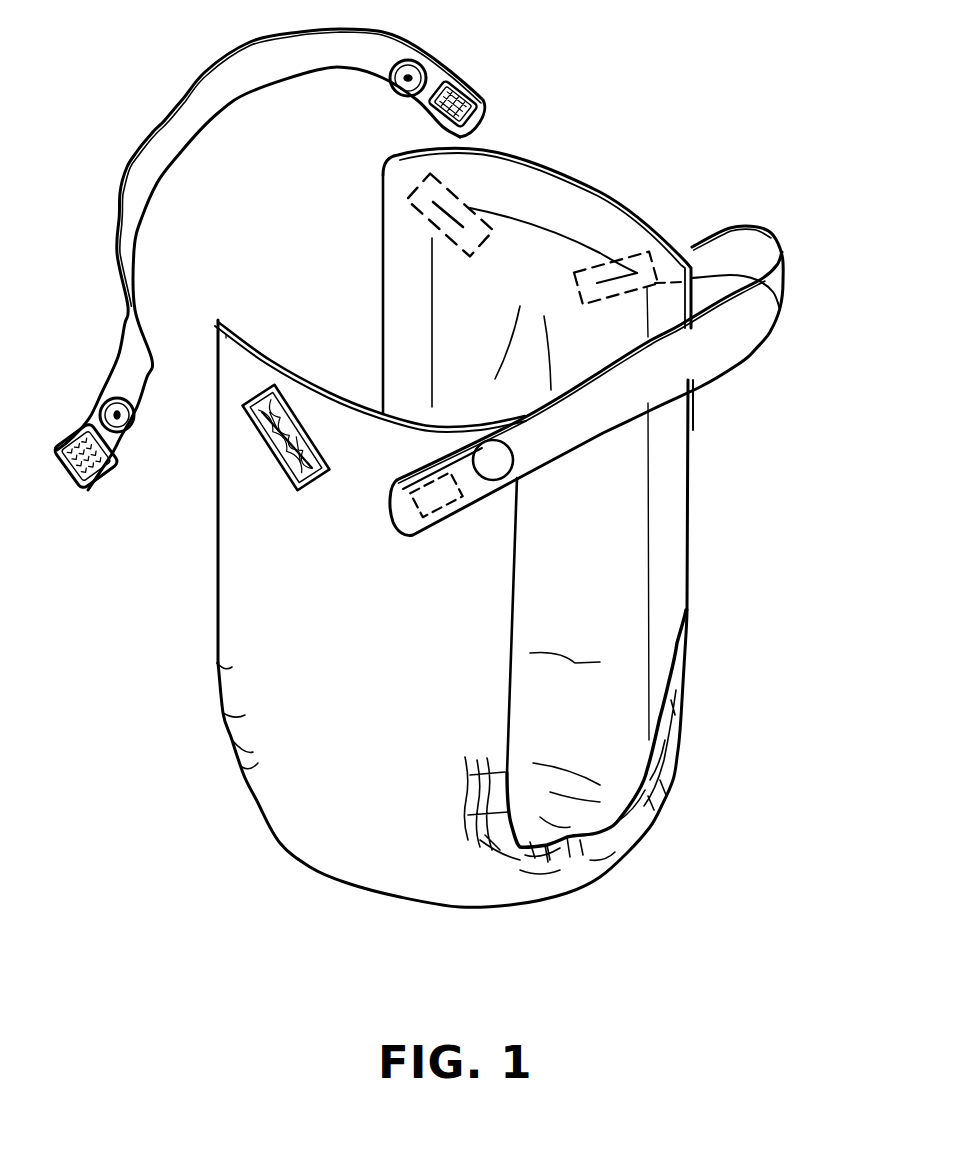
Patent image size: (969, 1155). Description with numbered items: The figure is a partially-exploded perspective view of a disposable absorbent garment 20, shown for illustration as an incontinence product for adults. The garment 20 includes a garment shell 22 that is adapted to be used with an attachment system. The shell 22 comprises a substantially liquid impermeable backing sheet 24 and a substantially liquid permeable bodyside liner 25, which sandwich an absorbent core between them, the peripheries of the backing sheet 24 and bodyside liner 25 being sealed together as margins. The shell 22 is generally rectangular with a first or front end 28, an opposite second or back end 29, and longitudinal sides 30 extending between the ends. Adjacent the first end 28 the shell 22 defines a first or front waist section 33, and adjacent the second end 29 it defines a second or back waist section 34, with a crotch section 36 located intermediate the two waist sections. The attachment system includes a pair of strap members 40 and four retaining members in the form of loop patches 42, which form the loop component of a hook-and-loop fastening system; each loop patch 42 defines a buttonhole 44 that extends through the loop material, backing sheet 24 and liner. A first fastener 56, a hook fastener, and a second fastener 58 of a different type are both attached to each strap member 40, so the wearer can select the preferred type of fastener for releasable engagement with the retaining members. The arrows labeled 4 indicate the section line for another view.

The disposable absorbent garment 20 is at (222, 893).
The garment shell 22 is at (222, 719).
The backing sheet 24 is at (382, 688).
The bodyside liner 25 is at (595, 597).
The first end 28 is at (303, 376).
The second end 29 is at (615, 203).
The longitudinal sides 30 is at (217, 638).
The first waist section 33 is at (246, 533).
The second waist section 34 is at (566, 160).
The crotch section 36 is at (654, 845).
The strap member 40 is at (193, 79).
The loop patch 42 is at (397, 221).
The buttonhole 44 is at (437, 228).
The first fastener 56 is at (80, 434).
The second fastener 58 is at (411, 57).
The section line for FIG. 4 is at (522, 383).